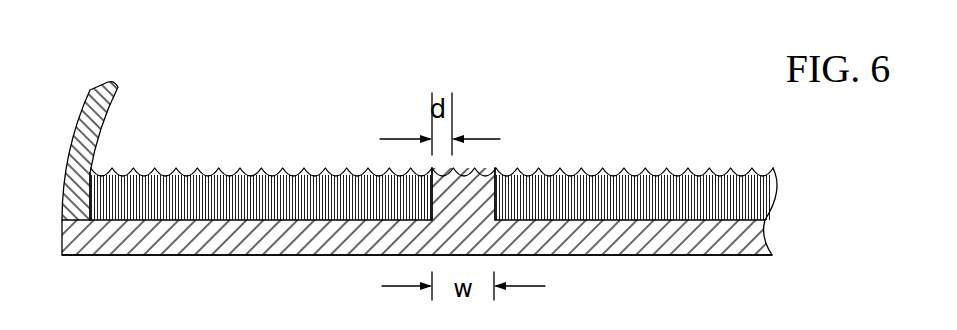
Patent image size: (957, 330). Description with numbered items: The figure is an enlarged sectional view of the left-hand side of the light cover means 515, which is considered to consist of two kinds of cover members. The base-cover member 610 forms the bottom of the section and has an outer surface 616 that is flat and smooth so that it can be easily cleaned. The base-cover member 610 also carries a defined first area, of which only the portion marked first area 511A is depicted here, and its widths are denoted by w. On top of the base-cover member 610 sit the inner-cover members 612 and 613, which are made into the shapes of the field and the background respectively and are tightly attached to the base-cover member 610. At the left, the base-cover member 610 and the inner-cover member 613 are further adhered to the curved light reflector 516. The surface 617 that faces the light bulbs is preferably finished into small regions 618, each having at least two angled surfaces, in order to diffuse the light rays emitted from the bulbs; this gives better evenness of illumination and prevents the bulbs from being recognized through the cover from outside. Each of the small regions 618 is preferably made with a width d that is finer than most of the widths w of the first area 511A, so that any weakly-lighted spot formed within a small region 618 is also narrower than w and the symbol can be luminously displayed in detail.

The light cover means 515 is at (862, 198).
The light reflector 516 is at (120, 86).
The first area 511A is at (456, 167).
The base-cover member 610 is at (765, 237).
The inner-cover member 612 is at (612, 178).
The inner-cover member 613 is at (157, 172).
The outer surface 616 is at (763, 277).
The surface facing light bulbs 617 is at (777, 163).
The small regions 618 is at (443, 169).